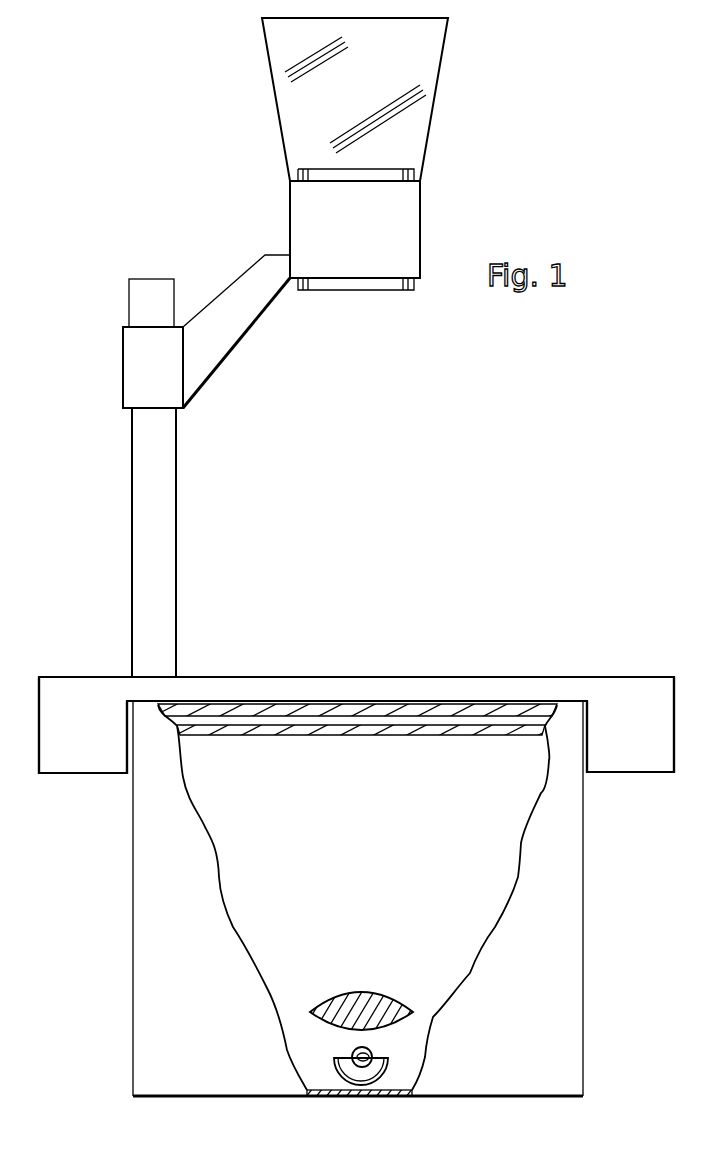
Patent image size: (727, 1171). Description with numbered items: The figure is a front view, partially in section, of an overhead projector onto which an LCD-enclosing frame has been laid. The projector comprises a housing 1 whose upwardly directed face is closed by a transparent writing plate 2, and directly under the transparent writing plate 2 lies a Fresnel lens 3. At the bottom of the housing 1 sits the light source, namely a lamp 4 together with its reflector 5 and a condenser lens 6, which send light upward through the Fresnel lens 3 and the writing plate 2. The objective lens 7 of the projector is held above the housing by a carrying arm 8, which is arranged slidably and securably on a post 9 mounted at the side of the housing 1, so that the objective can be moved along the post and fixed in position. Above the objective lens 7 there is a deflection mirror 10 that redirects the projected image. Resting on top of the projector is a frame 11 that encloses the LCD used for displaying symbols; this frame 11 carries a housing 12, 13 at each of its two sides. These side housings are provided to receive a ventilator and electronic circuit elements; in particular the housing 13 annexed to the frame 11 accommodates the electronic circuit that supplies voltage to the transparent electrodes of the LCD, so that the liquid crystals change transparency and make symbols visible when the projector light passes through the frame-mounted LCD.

The housing 1 is at (248, 1083).
The transparent writing plate 2 is at (278, 706).
The Fresnel lens 3 is at (330, 730).
The lamp 4 is at (351, 1055).
The reflector 5 is at (372, 1078).
The condenser lens 6 is at (362, 1006).
The objective lens 7 is at (355, 284).
The carrying arm 8 is at (255, 312).
The post 9 is at (166, 522).
The deflection mirror 10 is at (286, 117).
The frame 11 is at (436, 690).
The housing 12 is at (80, 720).
The housing 13 is at (630, 712).